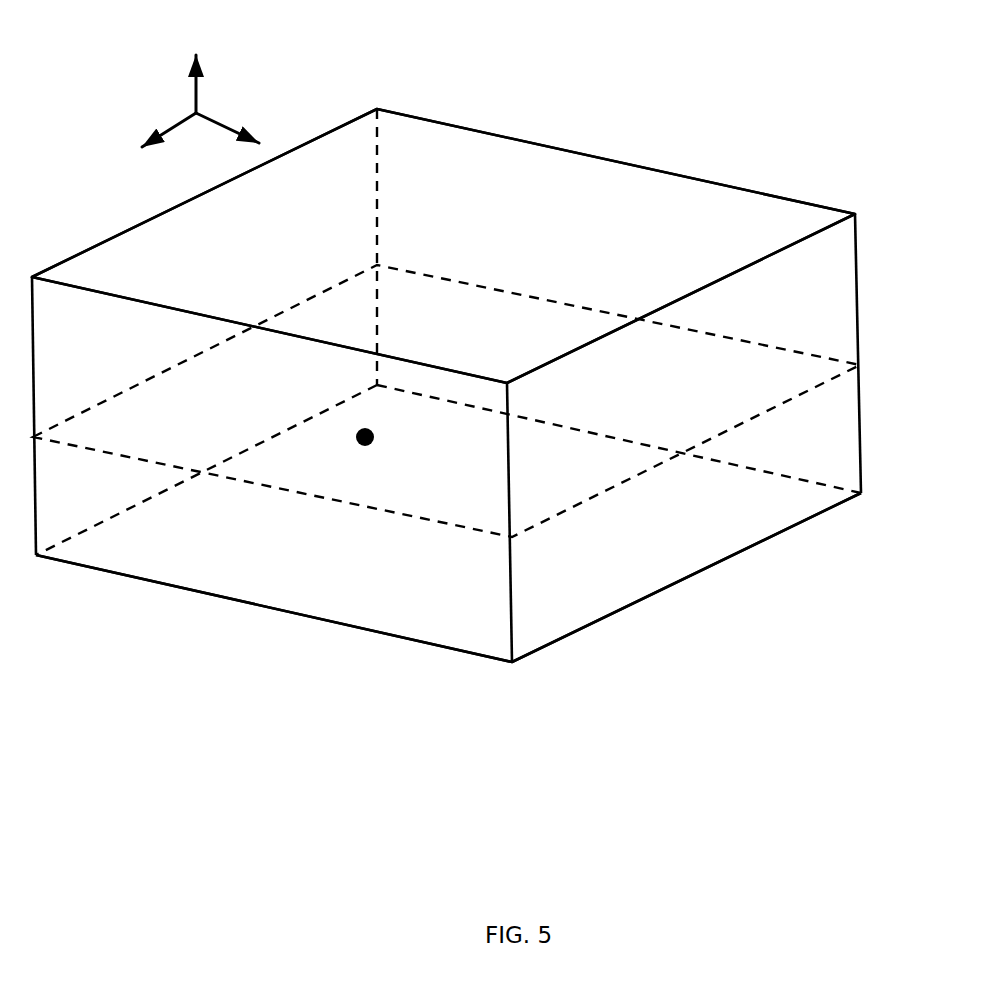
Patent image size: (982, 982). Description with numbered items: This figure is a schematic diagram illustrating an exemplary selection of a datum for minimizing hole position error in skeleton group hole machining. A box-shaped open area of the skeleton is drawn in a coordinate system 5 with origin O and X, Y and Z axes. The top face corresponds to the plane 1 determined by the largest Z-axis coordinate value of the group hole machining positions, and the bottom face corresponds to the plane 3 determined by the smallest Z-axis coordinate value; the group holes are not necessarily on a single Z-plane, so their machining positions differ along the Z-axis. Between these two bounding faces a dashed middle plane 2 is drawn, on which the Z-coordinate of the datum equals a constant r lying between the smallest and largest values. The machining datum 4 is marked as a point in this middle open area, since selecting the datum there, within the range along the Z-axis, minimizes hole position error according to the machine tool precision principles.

The plane Z1' = Zk1max (top face) 1 is at (757, 83).
The plane Z1' = r (machining datum plane) 2 is at (757, 420).
The plane Z1' = Zk1min (bottom face) 3 is at (350, 572).
The machining datum point 4 is at (356, 444).
The coordinate system OXYZ 5 is at (193, 82).